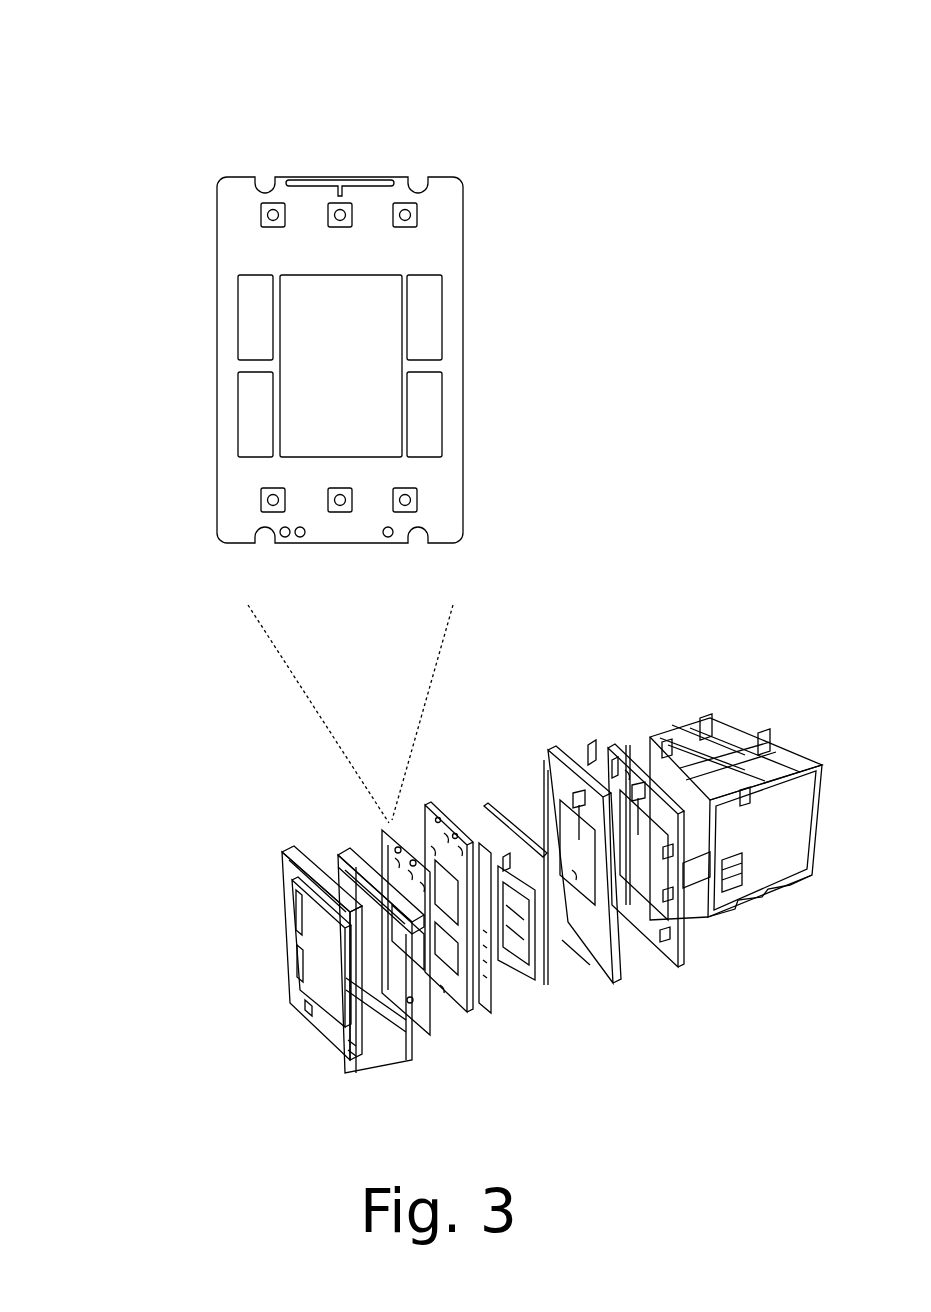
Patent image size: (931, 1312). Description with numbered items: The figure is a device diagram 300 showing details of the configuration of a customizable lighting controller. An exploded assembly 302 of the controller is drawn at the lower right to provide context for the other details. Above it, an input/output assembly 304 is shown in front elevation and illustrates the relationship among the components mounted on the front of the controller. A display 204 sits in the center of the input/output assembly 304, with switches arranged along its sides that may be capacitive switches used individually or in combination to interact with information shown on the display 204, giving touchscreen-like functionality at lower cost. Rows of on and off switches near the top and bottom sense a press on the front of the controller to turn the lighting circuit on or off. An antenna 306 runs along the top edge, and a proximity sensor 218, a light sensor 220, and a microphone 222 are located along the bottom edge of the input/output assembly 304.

The device diagram 300 is at (777, 58).
The assembly 302 is at (710, 683).
The input/output assembly 304 is at (222, 178).
The antenna 306 is at (381, 178).
The display 204 is at (298, 272).
The proximity sensor 218 is at (282, 543).
The light sensor 220 is at (300, 545).
The microphone 222 is at (390, 545).